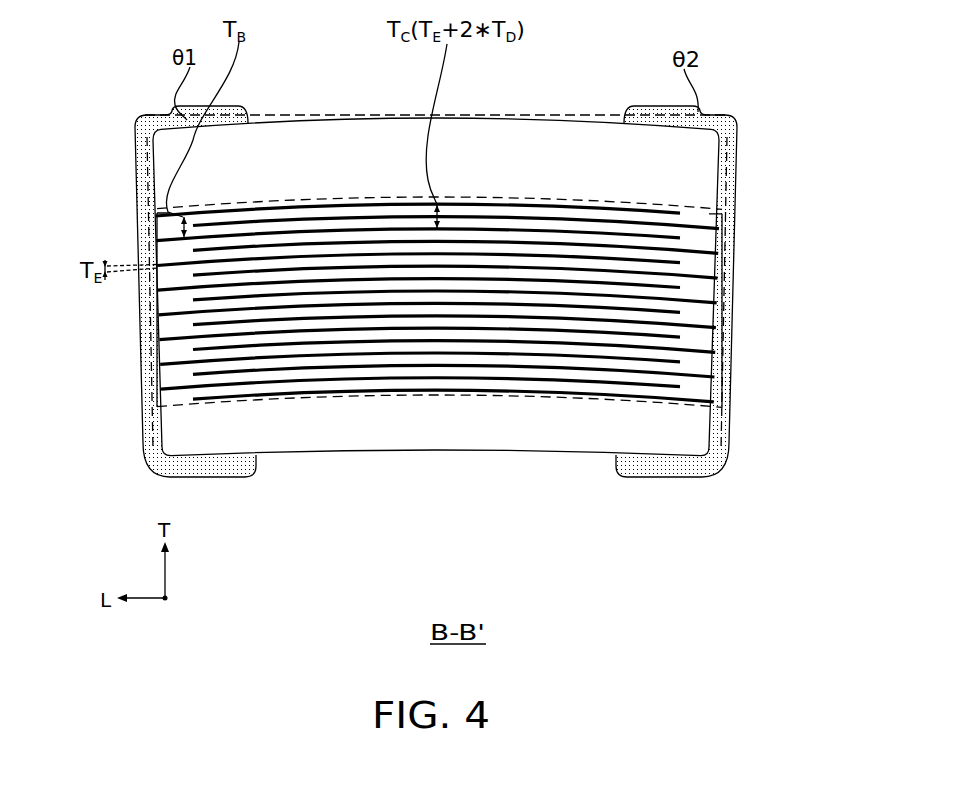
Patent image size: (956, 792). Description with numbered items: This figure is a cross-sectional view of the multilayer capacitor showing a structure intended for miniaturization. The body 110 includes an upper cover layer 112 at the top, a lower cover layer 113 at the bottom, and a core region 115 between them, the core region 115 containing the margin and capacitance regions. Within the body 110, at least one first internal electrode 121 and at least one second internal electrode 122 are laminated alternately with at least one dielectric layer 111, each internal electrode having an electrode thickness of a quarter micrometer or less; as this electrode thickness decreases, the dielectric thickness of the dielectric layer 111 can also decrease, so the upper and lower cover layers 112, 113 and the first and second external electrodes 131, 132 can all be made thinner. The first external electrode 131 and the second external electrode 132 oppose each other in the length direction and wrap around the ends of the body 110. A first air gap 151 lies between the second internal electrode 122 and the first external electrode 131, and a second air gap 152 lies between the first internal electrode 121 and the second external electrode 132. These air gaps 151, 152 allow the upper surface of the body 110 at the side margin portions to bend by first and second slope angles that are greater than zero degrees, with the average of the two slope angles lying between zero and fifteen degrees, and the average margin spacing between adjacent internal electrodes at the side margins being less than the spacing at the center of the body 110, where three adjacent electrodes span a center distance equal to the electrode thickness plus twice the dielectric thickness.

The body 110 is at (583, 108).
The dielectric layer 111 is at (518, 204).
The upper cover layer 112 is at (363, 132).
The lower cover layer 113 is at (543, 449).
The core region 115 is at (288, 190).
The first internal electrode 121 is at (173, 239).
The second internal electrode 122 is at (703, 248).
The first external electrode 131 is at (143, 175).
The second external electrode 132 is at (723, 184).
The first air gap 151 is at (210, 326).
The second air gap 152 is at (667, 311).